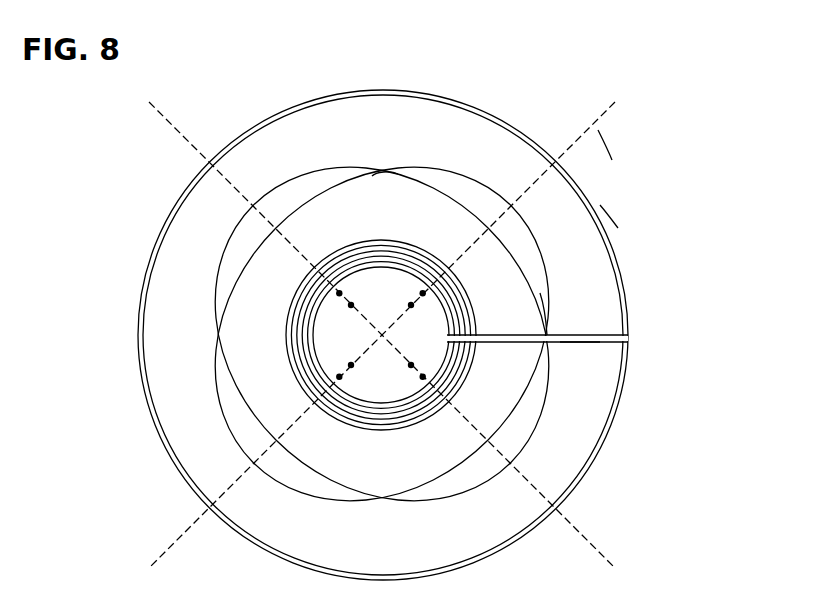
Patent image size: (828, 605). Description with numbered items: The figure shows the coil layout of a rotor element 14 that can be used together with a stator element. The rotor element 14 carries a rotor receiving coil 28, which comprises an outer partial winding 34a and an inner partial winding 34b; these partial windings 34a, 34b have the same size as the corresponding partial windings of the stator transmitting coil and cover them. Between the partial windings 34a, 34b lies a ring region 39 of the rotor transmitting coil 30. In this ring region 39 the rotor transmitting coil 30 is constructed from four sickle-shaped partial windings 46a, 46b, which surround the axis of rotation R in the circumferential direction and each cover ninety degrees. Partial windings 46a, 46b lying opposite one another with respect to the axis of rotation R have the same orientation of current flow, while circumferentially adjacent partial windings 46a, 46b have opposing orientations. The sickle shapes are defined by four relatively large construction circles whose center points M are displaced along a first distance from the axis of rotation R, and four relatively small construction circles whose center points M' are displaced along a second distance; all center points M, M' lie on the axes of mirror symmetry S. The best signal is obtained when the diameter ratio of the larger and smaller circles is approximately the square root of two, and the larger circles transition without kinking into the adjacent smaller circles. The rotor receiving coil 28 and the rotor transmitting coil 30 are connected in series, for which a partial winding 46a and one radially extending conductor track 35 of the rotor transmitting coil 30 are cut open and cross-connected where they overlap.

The rotor element 14 is at (613, 134).
The rotor receiving coil 28 is at (616, 204).
The rotor transmitting coil 30 is at (560, 308).
The outer partial winding 34a is at (481, 108).
The inner partial winding 34b is at (383, 178).
The radially extending conductor track 35 is at (578, 354).
The ring region 39 is at (562, 268).
The first partial winding 46a is at (517, 247).
The second partial winding 46b is at (245, 233).
The axis of rotation R is at (380, 335).
The axes of mirror symmetry S is at (170, 548).
The center points of the larger construction circles M is at (426, 338).
The center points of the smaller construction circles M' is at (341, 377).